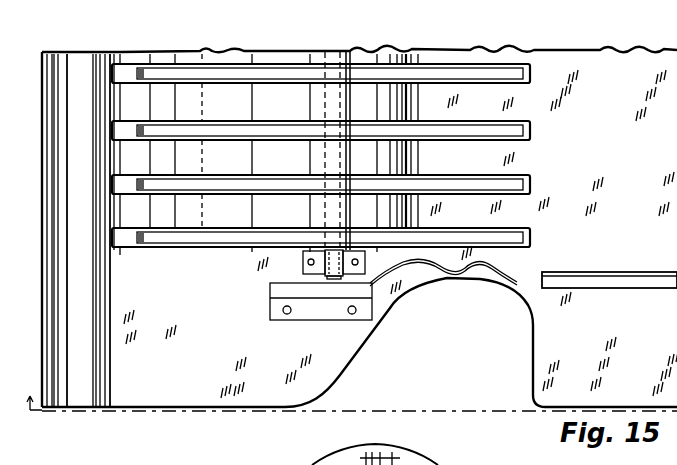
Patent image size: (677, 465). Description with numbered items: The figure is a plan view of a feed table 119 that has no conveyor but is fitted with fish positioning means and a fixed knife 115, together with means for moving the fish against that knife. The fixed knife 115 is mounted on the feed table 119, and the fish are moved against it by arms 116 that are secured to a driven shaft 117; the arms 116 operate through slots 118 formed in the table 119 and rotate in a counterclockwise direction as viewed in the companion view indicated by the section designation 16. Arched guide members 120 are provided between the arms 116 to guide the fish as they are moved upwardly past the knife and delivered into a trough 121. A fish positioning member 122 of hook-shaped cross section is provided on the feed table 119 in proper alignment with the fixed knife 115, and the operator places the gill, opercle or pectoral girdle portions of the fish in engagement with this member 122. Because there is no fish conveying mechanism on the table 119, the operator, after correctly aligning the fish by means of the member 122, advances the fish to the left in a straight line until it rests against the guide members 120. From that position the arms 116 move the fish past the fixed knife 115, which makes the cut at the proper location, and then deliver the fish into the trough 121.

The fixed knife 115 is at (445, 268).
The arms 116 is at (462, 72).
The driven shaft 117 is at (325, 160).
The slots 118 is at (128, 72).
The feed table 119 is at (548, 345).
The arched guide members 120 is at (287, 56).
The trough 121 is at (83, 378).
The fish positioning member 122 is at (651, 277).
The section line for FIG. 16 is at (35, 416).